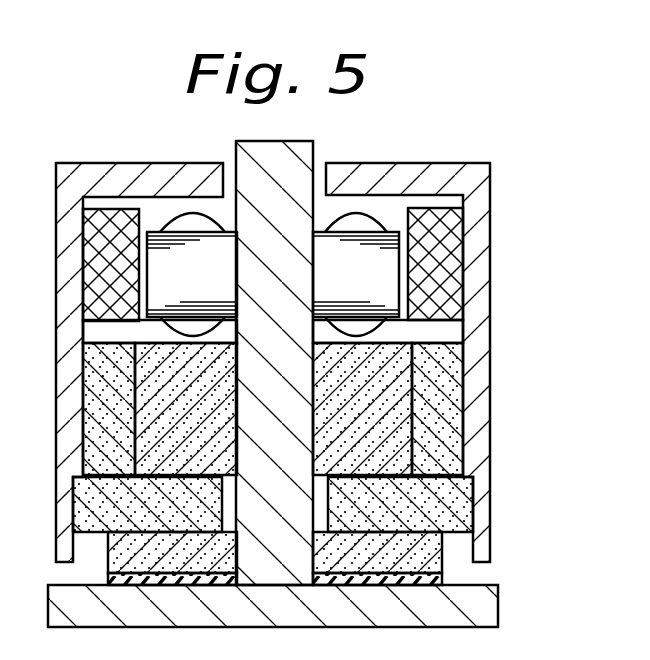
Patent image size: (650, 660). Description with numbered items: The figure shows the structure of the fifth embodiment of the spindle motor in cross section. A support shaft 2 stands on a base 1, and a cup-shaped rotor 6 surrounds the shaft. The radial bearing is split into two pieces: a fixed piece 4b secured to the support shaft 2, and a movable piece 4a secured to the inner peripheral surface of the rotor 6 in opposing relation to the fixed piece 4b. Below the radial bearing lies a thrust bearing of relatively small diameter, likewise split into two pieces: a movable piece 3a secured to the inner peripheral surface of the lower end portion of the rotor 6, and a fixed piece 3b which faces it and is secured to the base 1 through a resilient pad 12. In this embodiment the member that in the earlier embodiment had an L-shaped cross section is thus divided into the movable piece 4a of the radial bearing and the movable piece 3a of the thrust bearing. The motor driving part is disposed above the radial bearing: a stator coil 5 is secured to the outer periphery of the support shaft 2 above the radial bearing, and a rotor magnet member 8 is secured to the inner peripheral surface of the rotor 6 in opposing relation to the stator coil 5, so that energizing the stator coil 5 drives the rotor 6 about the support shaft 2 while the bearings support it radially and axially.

The base 1 is at (483, 610).
The support shaft 2 is at (300, 165).
The movable piece of the thrust bearing 3a is at (457, 493).
The fixed piece of the thrust bearing 3b is at (443, 547).
The movable piece of the radial bearing 4a is at (452, 405).
The fixed piece of the radial bearing 4b is at (400, 369).
The stator coil 5 is at (382, 275).
The rotor 6 is at (489, 166).
The rotor magnet member 8 is at (460, 219).
The resilient pad 12 is at (447, 578).